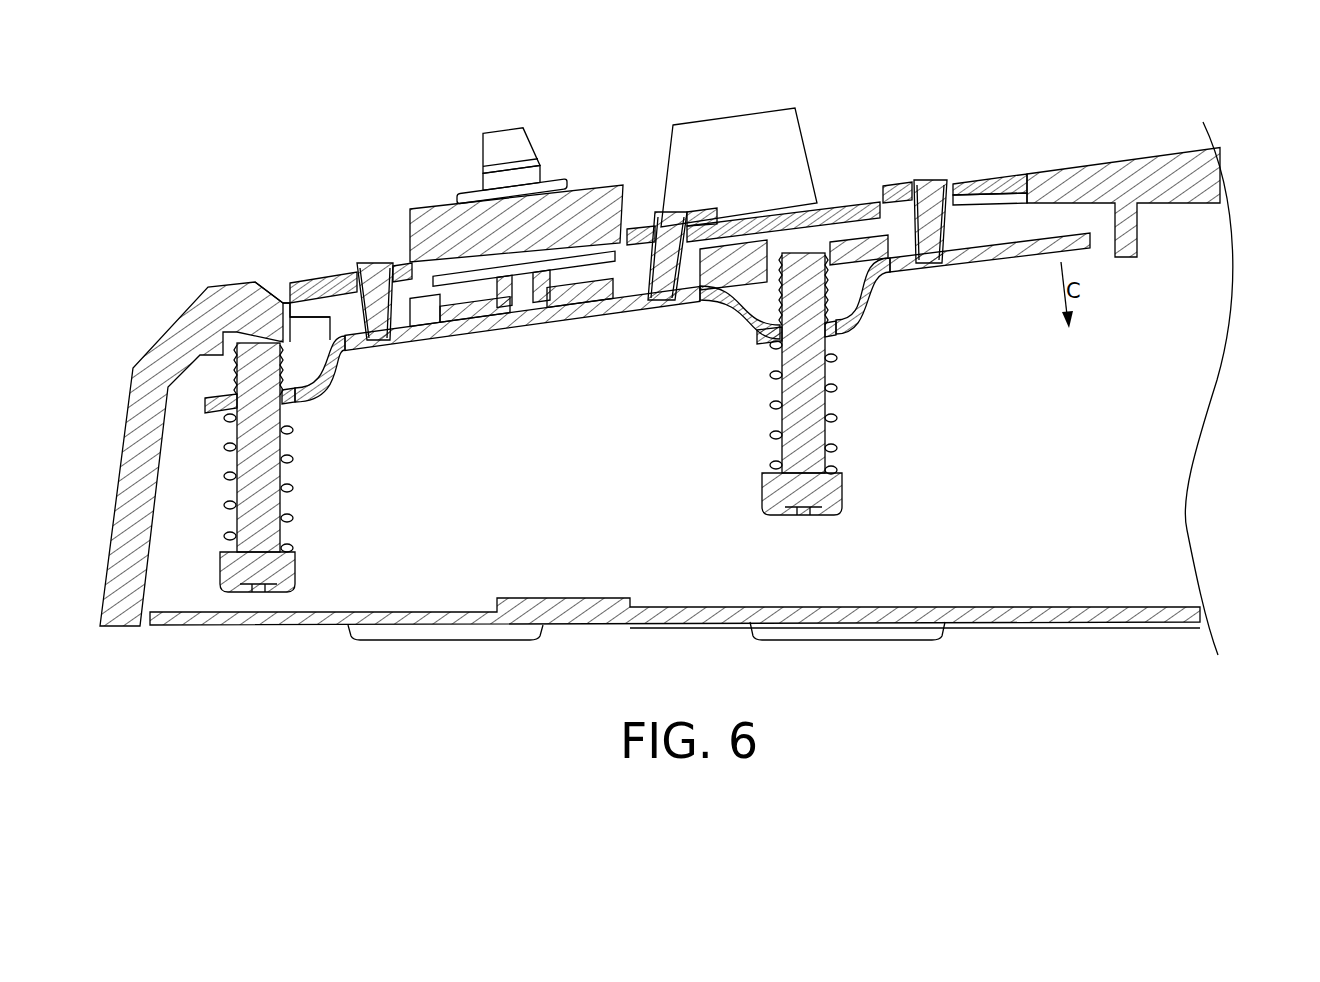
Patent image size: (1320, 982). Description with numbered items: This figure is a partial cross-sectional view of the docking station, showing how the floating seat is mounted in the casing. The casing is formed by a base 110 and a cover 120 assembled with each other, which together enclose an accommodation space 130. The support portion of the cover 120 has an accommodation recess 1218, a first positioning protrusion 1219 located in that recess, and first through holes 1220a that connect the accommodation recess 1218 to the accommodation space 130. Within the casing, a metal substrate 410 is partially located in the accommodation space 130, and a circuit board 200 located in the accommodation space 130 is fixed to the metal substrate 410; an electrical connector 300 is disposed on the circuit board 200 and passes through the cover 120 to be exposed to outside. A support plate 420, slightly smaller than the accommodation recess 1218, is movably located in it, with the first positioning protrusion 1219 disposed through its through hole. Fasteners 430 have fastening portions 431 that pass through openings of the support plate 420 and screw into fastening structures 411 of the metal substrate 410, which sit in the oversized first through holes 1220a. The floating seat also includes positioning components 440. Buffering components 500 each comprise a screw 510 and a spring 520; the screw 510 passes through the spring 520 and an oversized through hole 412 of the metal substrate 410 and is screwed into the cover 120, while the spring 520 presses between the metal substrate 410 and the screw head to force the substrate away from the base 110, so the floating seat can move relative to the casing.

The base 110 is at (1190, 612).
The cover 120 is at (1198, 183).
The accommodation space 130 is at (1108, 446).
The circuit board 200 is at (600, 296).
The electrical connector 300 is at (553, 182).
The metal substrate 410 is at (430, 340).
The fastening structure 411 is at (353, 350).
The through hole 412 is at (293, 416).
The support plate 420 is at (848, 204).
The fastener 430 is at (375, 268).
The fastening portion 431 is at (388, 336).
The positioning component 440 is at (493, 134).
The buffering component 500 is at (600, 422).
The screw 510 is at (272, 530).
The spring 520 is at (292, 484).
The accommodation recess 1218 is at (296, 290).
The first positioning protrusion 1219 is at (772, 128).
The first through hole 1220a is at (338, 305).